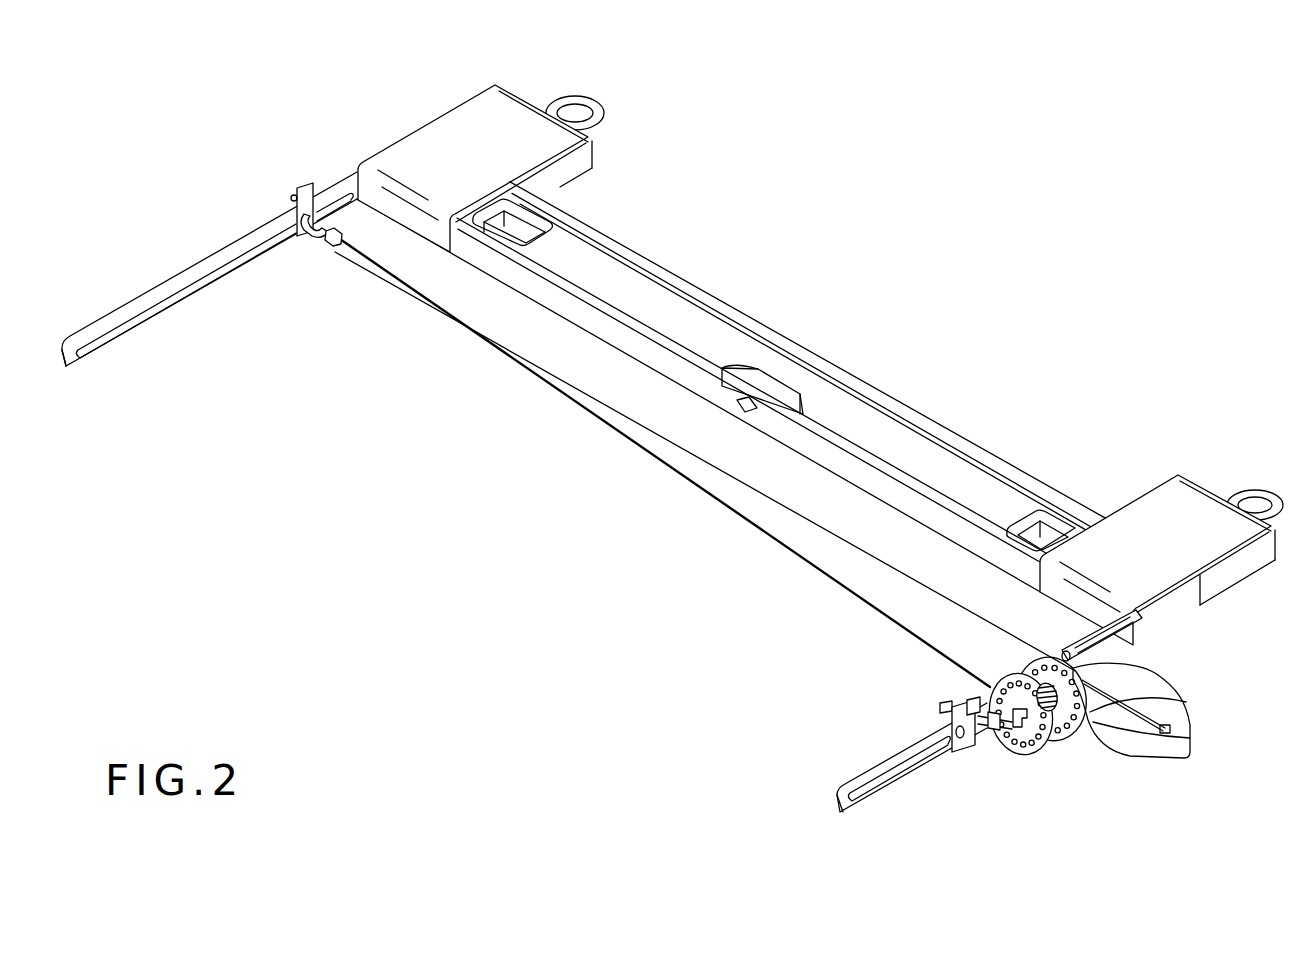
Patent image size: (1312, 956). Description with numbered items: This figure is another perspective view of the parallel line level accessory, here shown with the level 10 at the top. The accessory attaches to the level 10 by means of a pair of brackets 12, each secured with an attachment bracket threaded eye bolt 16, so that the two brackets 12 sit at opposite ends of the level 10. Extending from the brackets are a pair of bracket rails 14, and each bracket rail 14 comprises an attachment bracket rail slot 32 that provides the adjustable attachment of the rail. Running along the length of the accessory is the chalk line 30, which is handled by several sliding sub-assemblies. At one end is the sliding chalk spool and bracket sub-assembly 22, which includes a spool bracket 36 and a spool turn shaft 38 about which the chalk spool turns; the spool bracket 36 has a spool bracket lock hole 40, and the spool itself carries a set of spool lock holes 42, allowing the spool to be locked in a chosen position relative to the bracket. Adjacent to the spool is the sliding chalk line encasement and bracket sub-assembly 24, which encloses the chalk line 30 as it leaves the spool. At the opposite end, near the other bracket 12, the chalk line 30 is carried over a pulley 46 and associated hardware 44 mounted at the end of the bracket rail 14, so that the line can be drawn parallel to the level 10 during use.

The level 10 is at (290, 174).
The bracket 12 is at (486, 118).
The bracket rail 14 is at (183, 275).
The attachment bracket threaded eye bolt 16 is at (590, 102).
The sliding chalk spool and bracket sub-assembly 22 is at (1003, 720).
The sliding chalk line encasement and bracket sub-assembly 24 is at (1161, 684).
The chalk line 30 is at (373, 262).
The attachment bracket rail slot 32 is at (165, 300).
The spool bracket 36 is at (963, 702).
The spool turn shaft 38 is at (987, 676).
The spool bracket lock hole 40 is at (1004, 682).
The spool lock hole 42 is at (1186, 698).
The nut / fastener 44 is at (322, 248).
The pulley 46 is at (300, 200).